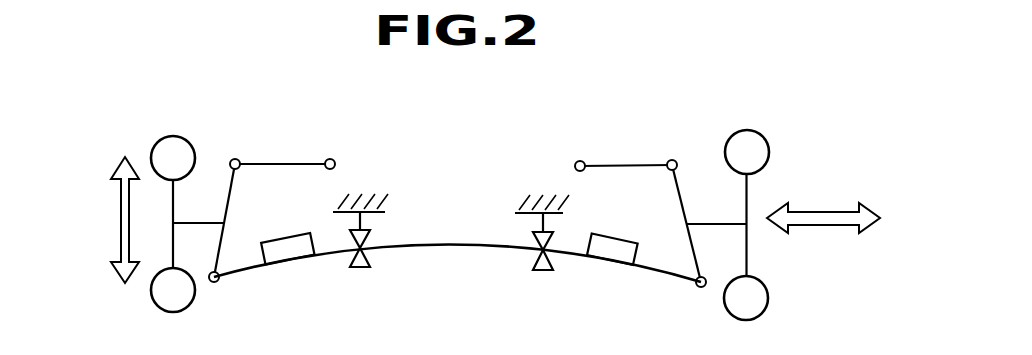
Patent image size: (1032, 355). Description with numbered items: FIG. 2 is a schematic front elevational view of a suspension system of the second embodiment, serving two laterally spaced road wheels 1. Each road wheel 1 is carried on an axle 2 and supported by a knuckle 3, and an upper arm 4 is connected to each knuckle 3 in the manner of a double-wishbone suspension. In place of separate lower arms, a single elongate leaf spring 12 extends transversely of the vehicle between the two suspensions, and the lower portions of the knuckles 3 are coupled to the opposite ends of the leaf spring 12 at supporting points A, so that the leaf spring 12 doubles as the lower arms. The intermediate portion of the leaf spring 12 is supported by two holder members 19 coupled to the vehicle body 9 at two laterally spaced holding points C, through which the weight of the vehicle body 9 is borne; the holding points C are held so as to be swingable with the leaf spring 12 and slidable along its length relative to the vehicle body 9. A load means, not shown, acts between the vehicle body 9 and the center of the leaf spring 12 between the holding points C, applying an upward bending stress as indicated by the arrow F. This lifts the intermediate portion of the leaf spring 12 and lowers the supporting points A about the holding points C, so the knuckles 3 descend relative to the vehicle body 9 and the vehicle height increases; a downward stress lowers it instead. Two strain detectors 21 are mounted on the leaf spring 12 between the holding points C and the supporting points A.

The road wheel 1 is at (160, 142).
The axle 2 is at (198, 222).
The knuckle 3 is at (228, 208).
The upper arm 4 is at (277, 162).
The vehicle body 9 is at (367, 204).
The leaf spring 12 is at (461, 245).
The holder member 19 is at (361, 268).
The strain detector 21 is at (287, 232).
The supporting point A is at (214, 283).
The holding point C is at (353, 252).
The arrow F is at (462, 256).